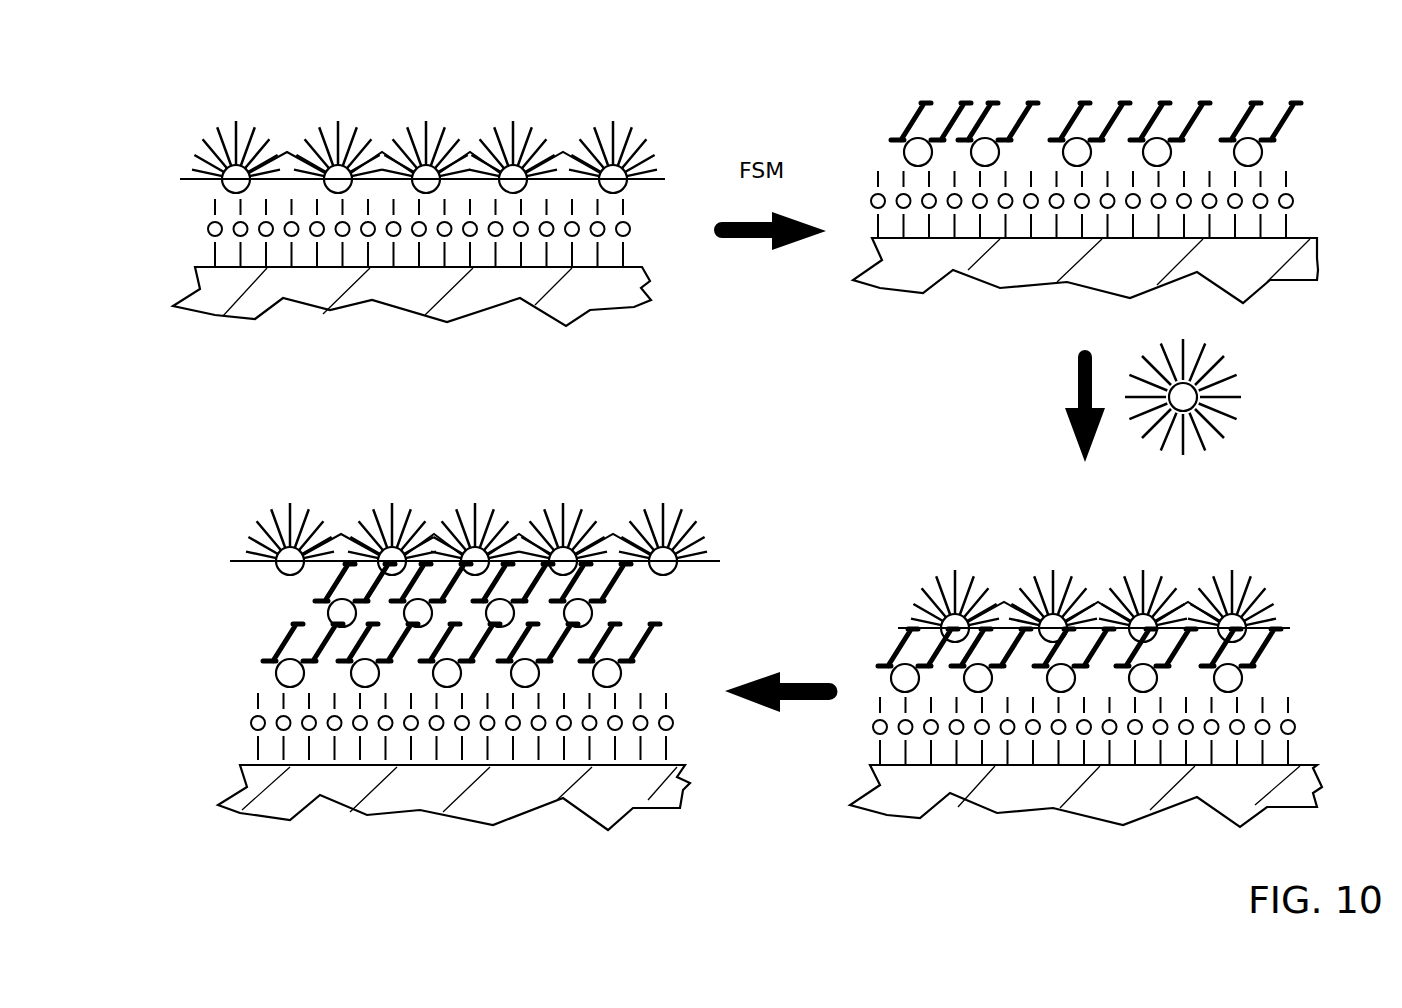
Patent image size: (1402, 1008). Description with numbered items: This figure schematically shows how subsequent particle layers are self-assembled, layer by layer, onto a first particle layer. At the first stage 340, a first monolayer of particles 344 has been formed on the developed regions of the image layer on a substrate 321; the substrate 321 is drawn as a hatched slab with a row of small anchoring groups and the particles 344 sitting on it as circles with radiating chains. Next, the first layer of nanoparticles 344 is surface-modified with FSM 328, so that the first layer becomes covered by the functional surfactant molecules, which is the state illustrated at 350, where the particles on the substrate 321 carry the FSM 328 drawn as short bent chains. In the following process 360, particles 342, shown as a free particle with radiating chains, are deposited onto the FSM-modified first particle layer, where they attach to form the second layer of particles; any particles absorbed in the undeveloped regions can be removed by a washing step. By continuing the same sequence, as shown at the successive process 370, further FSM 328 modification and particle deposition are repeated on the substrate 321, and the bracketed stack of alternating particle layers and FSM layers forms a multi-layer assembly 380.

The substrate 321 is at (650, 283).
The FSM 328 is at (1117, 112).
The first particle layer process stage 340 is at (153, 100).
The particles 342 is at (1197, 374).
The first monolayer of particles 344 is at (323, 171).
The FSM-modified first layer stage 350 is at (863, 100).
The second layer deposition process 360 is at (858, 520).
The successive process 370 is at (156, 535).
The multi-layer assembly 380 is at (228, 511).